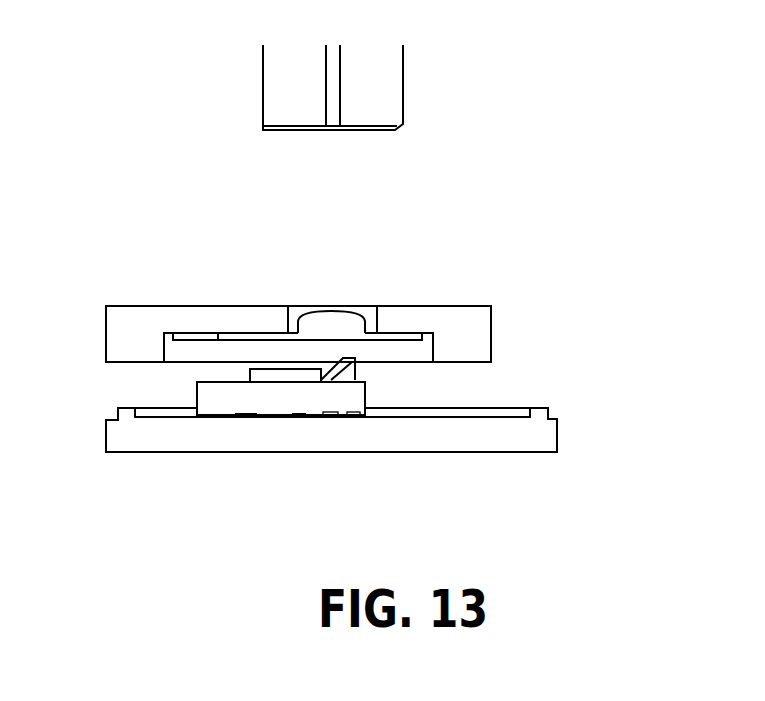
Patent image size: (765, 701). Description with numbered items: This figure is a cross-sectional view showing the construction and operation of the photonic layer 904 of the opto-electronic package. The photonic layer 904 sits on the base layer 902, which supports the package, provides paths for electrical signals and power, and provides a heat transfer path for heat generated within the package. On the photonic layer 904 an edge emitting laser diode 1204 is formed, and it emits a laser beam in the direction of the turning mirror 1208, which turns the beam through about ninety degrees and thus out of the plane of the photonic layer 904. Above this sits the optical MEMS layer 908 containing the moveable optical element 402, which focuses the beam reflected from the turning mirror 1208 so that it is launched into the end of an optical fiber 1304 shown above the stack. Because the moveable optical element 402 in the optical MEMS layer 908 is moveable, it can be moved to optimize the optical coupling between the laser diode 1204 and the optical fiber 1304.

The optical fiber 1304 is at (403, 92).
The moveable optical element 402 is at (340, 328).
The optical MEMS layer 908 is at (512, 305).
The turning mirror 1208 is at (345, 369).
The base layer 902 is at (570, 393).
The photonic layer 904 is at (285, 394).
The edge emitting laser diode 1204 is at (308, 375).